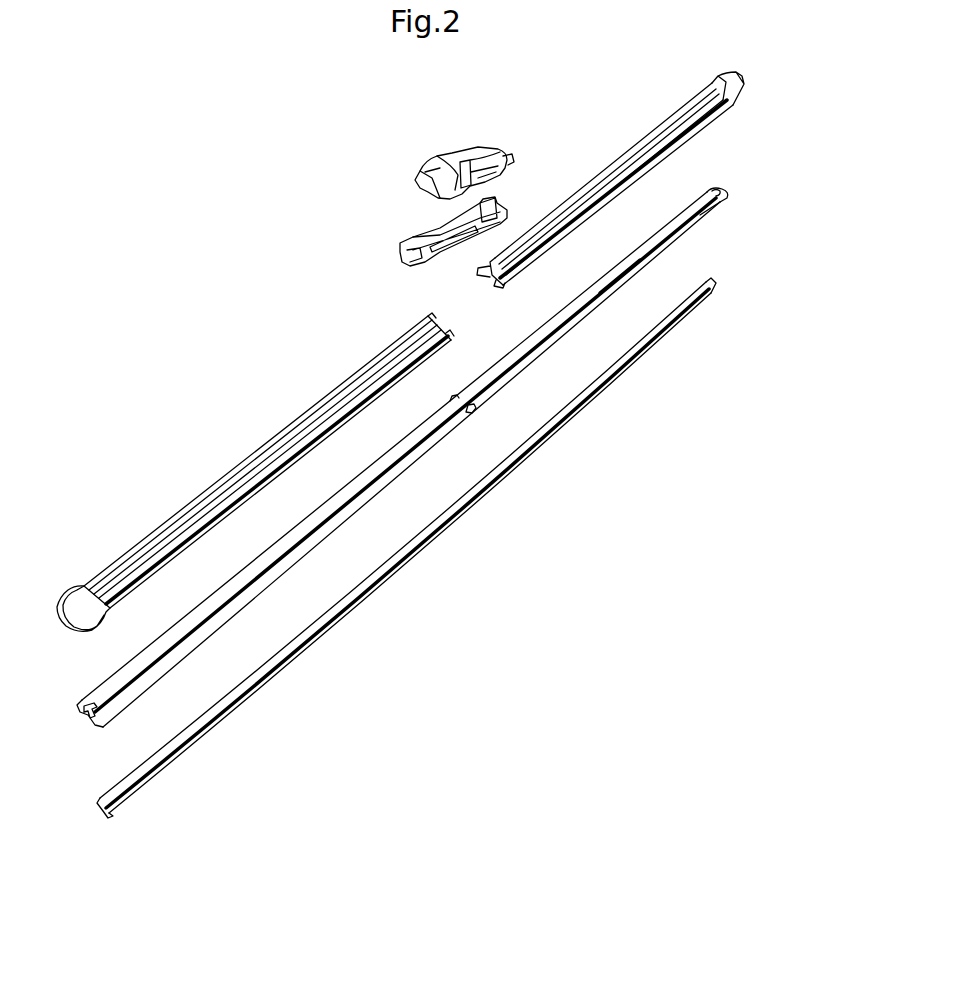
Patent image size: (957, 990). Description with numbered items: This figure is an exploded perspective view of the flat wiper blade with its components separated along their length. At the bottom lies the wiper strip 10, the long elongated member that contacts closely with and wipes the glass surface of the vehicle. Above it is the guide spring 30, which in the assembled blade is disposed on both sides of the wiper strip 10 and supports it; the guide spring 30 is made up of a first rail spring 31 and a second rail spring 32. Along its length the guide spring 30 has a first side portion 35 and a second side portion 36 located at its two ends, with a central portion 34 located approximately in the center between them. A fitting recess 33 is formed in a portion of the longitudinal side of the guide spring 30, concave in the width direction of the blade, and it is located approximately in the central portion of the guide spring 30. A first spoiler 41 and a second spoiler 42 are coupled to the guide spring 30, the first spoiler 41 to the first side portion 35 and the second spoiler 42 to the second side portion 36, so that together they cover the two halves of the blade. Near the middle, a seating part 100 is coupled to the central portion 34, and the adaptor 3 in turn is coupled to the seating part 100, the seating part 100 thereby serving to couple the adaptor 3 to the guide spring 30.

The adaptor 3 is at (458, 138).
The seating part 100 is at (422, 236).
The second spoiler 42 is at (654, 128).
The guide spring 30 is at (443, 457).
The first rail spring 31 is at (713, 199).
The second rail spring 32 is at (716, 212).
The fitting recess 33 is at (453, 396).
The central portion 34 is at (468, 409).
The first side portion 35 is at (296, 553).
The second side portion 36 is at (620, 279).
The first spoiler 41 is at (349, 375).
The wiper strip 10 is at (505, 469).